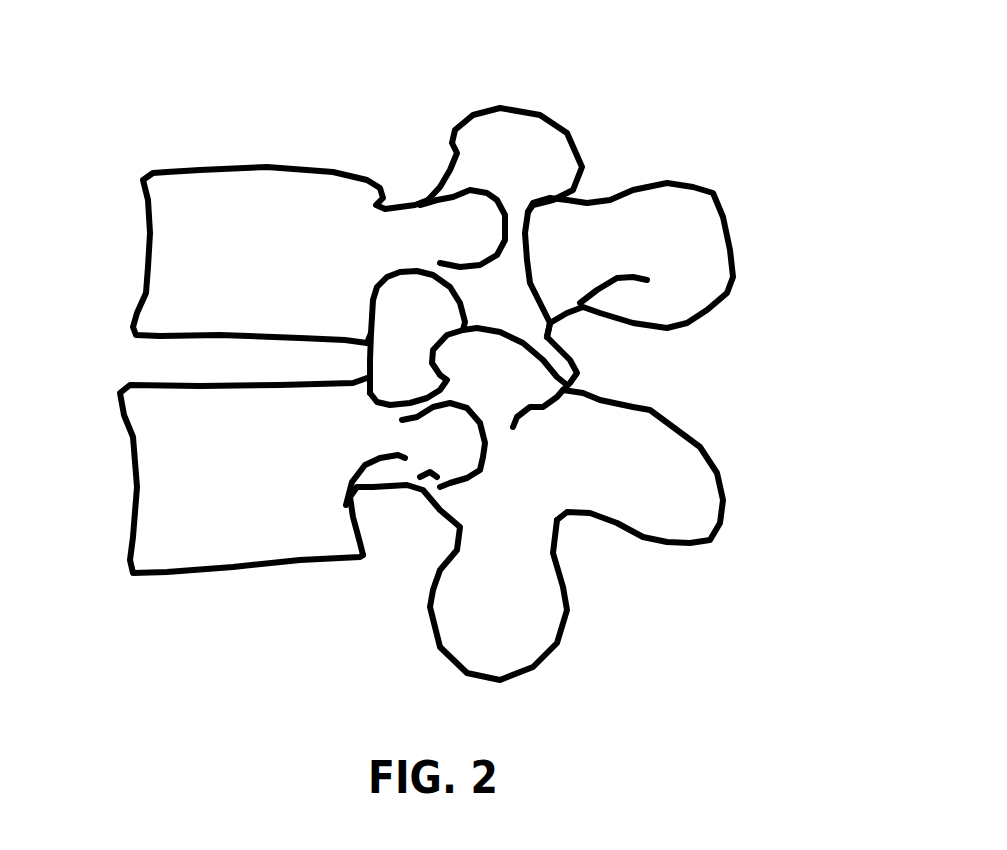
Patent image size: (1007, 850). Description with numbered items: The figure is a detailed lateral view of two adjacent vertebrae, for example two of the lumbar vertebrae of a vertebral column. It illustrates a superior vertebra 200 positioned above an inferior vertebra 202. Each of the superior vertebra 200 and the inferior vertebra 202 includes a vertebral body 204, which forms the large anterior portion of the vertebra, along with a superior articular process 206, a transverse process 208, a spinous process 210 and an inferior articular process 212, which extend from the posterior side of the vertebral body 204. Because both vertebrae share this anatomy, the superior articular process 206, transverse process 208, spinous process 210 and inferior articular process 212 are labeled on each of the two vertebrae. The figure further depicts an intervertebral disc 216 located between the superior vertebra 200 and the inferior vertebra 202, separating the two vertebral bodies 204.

The superior vertebra 200 is at (712, 186).
The inferior vertebra 202 is at (730, 540).
The vertebral body 204 is at (225, 364).
The superior articular process 206 is at (560, 219).
The transverse process 208 is at (371, 380).
The spinous process 210 is at (710, 363).
The inferior articular process 212 is at (563, 488).
The intervertebral disc 216 is at (190, 321).